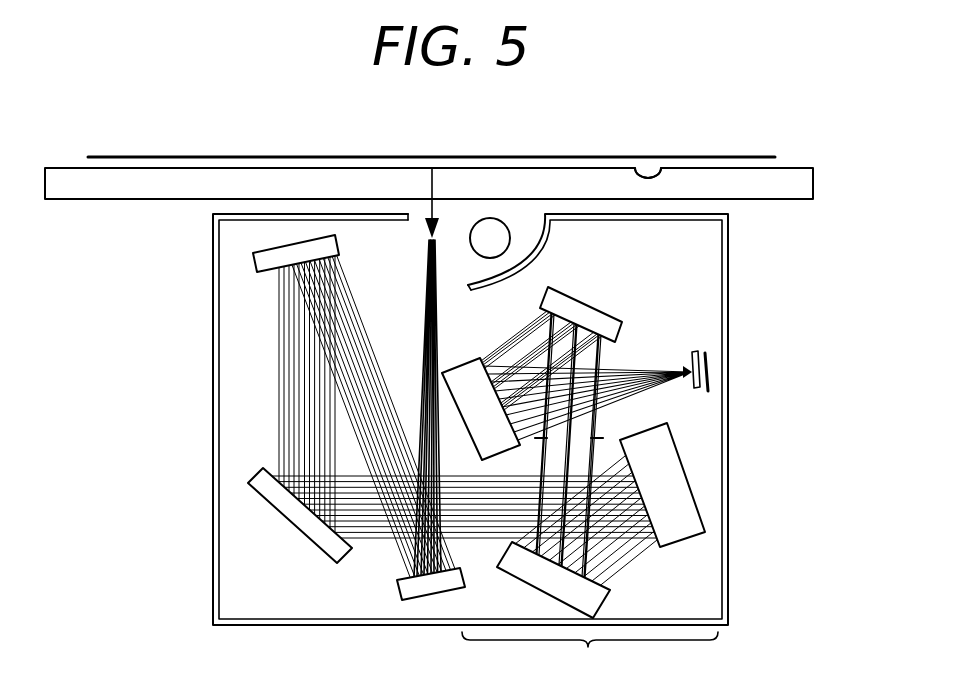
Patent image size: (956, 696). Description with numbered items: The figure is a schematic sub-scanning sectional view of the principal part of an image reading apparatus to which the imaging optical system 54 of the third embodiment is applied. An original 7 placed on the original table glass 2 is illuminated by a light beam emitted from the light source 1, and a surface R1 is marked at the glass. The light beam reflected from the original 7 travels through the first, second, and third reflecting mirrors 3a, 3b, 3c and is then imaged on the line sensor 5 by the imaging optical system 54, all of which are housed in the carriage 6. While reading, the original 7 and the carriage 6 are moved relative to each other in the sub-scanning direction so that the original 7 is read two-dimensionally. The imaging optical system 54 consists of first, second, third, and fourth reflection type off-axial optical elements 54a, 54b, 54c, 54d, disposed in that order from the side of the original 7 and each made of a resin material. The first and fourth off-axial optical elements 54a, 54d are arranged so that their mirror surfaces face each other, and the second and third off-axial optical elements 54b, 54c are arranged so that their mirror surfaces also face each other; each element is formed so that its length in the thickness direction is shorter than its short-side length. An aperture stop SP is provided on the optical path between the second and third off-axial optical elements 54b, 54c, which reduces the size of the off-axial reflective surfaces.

The light source 1 is at (490, 218).
The original table glass 2 is at (238, 174).
The first reflecting mirror 3a is at (397, 588).
The second reflecting mirror 3b is at (312, 240).
The third reflecting mirror 3c is at (279, 513).
The line sensor 5 is at (712, 372).
The carriage 6 is at (729, 540).
The original 7 is at (143, 157).
The imaging optical system 54 is at (581, 484).
The first off-axial optical element 54a is at (683, 540).
The second off-axial optical element 54b is at (598, 604).
The third off-axial optical element 54c is at (614, 323).
The fourth off-axial optical element 54d is at (470, 364).
The R1 surface R1 is at (658, 168).
The aperture stop SP is at (603, 438).